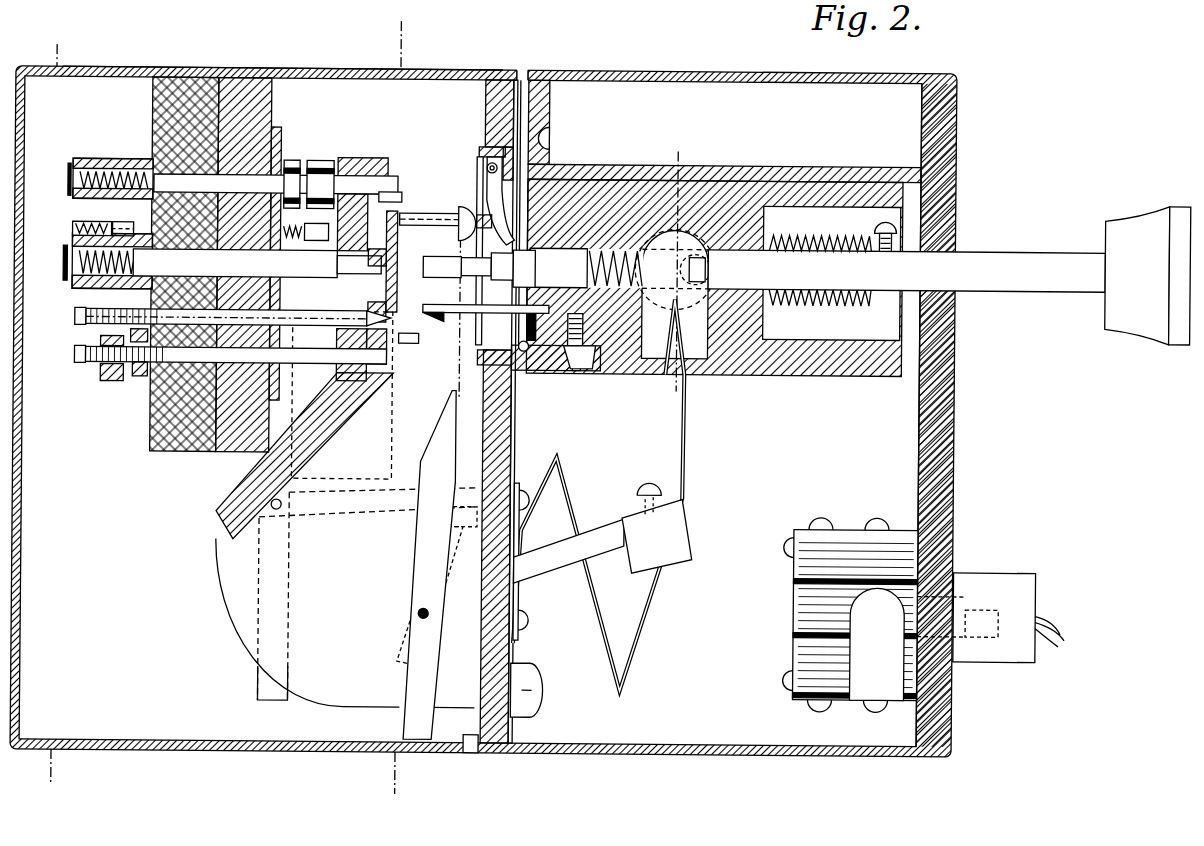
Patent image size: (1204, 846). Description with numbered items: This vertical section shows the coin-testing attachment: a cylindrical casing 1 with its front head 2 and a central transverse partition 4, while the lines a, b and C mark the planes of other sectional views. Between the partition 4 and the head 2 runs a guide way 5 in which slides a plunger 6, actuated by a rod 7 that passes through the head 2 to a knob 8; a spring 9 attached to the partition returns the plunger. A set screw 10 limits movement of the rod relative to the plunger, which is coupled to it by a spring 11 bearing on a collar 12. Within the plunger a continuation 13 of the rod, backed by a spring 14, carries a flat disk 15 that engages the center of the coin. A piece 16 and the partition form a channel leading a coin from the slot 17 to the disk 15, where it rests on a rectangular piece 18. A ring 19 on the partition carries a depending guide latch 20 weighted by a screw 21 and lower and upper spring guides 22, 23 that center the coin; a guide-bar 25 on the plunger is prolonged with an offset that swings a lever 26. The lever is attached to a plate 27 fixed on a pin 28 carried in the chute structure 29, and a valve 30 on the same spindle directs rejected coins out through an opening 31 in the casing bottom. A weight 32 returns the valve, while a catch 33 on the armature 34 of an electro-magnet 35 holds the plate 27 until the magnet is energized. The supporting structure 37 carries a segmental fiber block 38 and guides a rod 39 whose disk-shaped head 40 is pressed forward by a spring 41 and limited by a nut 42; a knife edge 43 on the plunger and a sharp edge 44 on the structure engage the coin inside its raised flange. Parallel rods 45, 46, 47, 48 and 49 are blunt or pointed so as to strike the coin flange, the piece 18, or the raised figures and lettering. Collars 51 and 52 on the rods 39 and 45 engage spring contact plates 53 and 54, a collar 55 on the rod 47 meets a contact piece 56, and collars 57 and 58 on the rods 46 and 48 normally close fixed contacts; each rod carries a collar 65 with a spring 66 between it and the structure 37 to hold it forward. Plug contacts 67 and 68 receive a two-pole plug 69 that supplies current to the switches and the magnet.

The cylindrical casing 1 is at (748, 74).
The front head 2 is at (950, 173).
The transverse partition 4 is at (484, 108).
The guide way 5 is at (735, 166).
The plunger 6 is at (638, 184).
The rod 7 is at (906, 271).
The knob or handle 8 is at (1148, 275).
The spring 9 is at (688, 468).
The set screw 10 is at (675, 269).
The spring 11 is at (816, 303).
The collar 12 is at (878, 303).
The continuation of the rod 13 is at (558, 267).
The spring 14 is at (604, 250).
The flat disk 15 is at (525, 264).
The piece 16 is at (553, 130).
The slot 17 is at (520, 72).
The piece of rectangular section 18 is at (586, 368).
The ring 19 is at (478, 152).
The guide latch 20 is at (486, 183).
The screw 21 is at (460, 212).
The lower spring guides 22 is at (437, 305).
The upper spring guides 23 is at (434, 222).
The guide-bar 25 is at (457, 267).
The lever 26 is at (466, 246).
The plate 27 is at (432, 567).
The horizontal pin 28 is at (419, 615).
The structure 29 is at (333, 700).
The valve or coin-directing member 30 is at (442, 424).
The opening 31 is at (474, 754).
The weight 32 is at (641, 571).
The catch 33 is at (403, 518).
The armature 34 is at (334, 519).
The electro-magnet 35 is at (304, 456).
The supporting structure 37 is at (280, 140).
The block 38 is at (176, 455).
The rod 39 is at (355, 426).
The disk shaped head 40 is at (396, 242).
The spring 41 is at (386, 292).
The nut or head 42 is at (235, 263).
The knife edge 43 is at (524, 352).
The sharp edge 44 is at (418, 343).
The rod 45 is at (550, 200).
The rod 46 is at (233, 316).
The rod 47 is at (230, 354).
The point 48 is at (339, 264).
The point 49 is at (71, 230).
The metallic collar 51 is at (75, 292).
The metallic collar 52 is at (88, 168).
The spring contact plate 53 is at (63, 266).
The spring contact plate 54 is at (66, 183).
The metallic collar 55 is at (139, 380).
The contact piece 56 is at (108, 384).
The metallic collar 57 is at (90, 318).
The metallic collar 58 is at (114, 230).
The collar 65 is at (310, 191).
The screw 66 is at (296, 175).
The plug contact 67 is at (876, 644).
The plug contact 68 is at (800, 528).
The two-pole contact plug 69 is at (1014, 578).
The section line a— a is at (392, 409).
The section line b— b is at (52, 416).
The section line c—c C is at (672, 272).